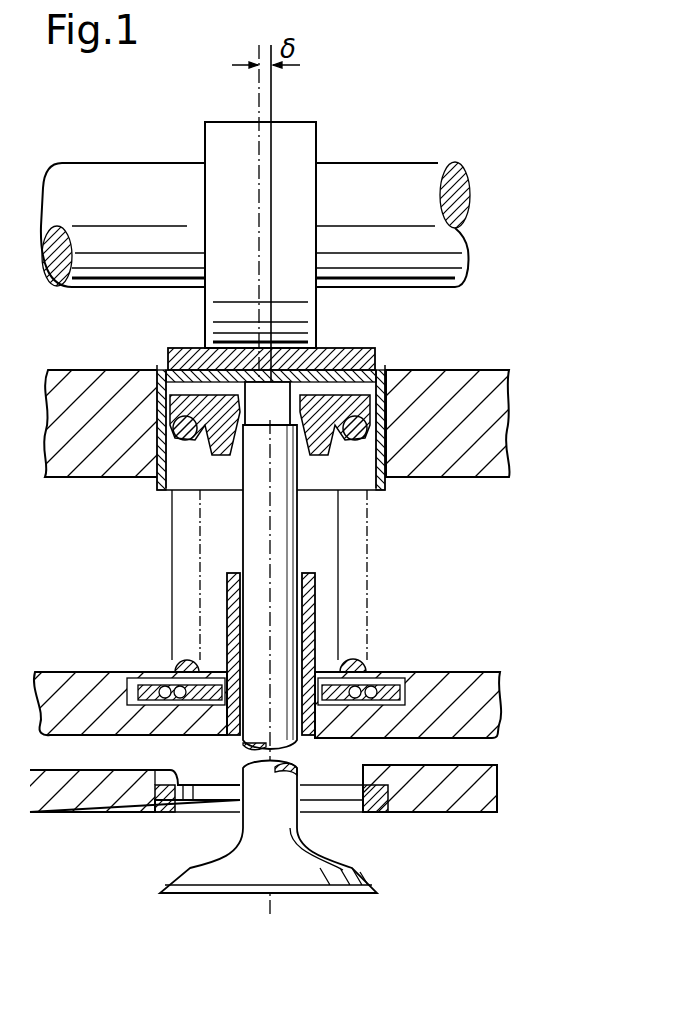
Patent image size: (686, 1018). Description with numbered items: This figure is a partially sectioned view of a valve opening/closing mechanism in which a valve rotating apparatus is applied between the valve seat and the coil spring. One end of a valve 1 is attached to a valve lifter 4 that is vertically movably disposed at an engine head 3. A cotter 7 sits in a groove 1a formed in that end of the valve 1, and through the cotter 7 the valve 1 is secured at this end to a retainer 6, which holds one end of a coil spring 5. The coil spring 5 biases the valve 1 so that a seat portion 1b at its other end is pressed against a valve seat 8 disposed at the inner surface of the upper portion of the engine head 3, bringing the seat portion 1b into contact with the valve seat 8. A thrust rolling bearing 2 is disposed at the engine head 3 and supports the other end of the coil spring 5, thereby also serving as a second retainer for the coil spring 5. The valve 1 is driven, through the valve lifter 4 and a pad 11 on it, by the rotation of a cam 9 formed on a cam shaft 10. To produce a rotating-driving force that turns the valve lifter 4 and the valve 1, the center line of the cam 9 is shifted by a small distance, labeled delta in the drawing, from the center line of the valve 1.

The valve 1 is at (287, 527).
The groove 1a is at (274, 438).
The seat portion 1b is at (372, 878).
The thrust rolling bearing 2 is at (383, 671).
The engine head 3 is at (500, 420).
The valve lifter 4 is at (382, 355).
The coil spring 5 is at (367, 590).
The retainer 6 is at (318, 442).
The cotter 7 is at (225, 442).
The valve seat 8 is at (380, 812).
The cam 9 is at (290, 140).
The cam shaft 10 is at (385, 185).
The pad 11 is at (168, 352).